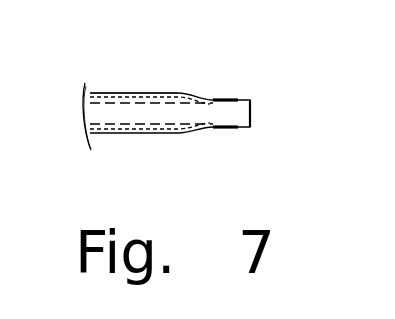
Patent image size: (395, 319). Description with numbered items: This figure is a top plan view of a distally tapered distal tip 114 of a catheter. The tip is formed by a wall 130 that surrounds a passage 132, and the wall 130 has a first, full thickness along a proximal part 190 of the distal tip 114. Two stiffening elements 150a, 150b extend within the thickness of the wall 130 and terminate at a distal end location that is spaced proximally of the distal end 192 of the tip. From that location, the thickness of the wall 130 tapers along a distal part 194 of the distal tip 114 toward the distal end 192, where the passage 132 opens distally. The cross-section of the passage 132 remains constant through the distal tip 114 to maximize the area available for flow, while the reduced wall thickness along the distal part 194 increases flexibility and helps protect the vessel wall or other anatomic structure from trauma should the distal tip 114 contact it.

The distal tip 114 is at (261, 81).
The wall 130 is at (107, 91).
The passage 132 is at (226, 111).
The stiffening element 150a is at (142, 137).
The stiffening element 150b is at (147, 89).
The proximal part 190 is at (92, 119).
The distal end 192 is at (252, 115).
The distal part 194 is at (232, 128).